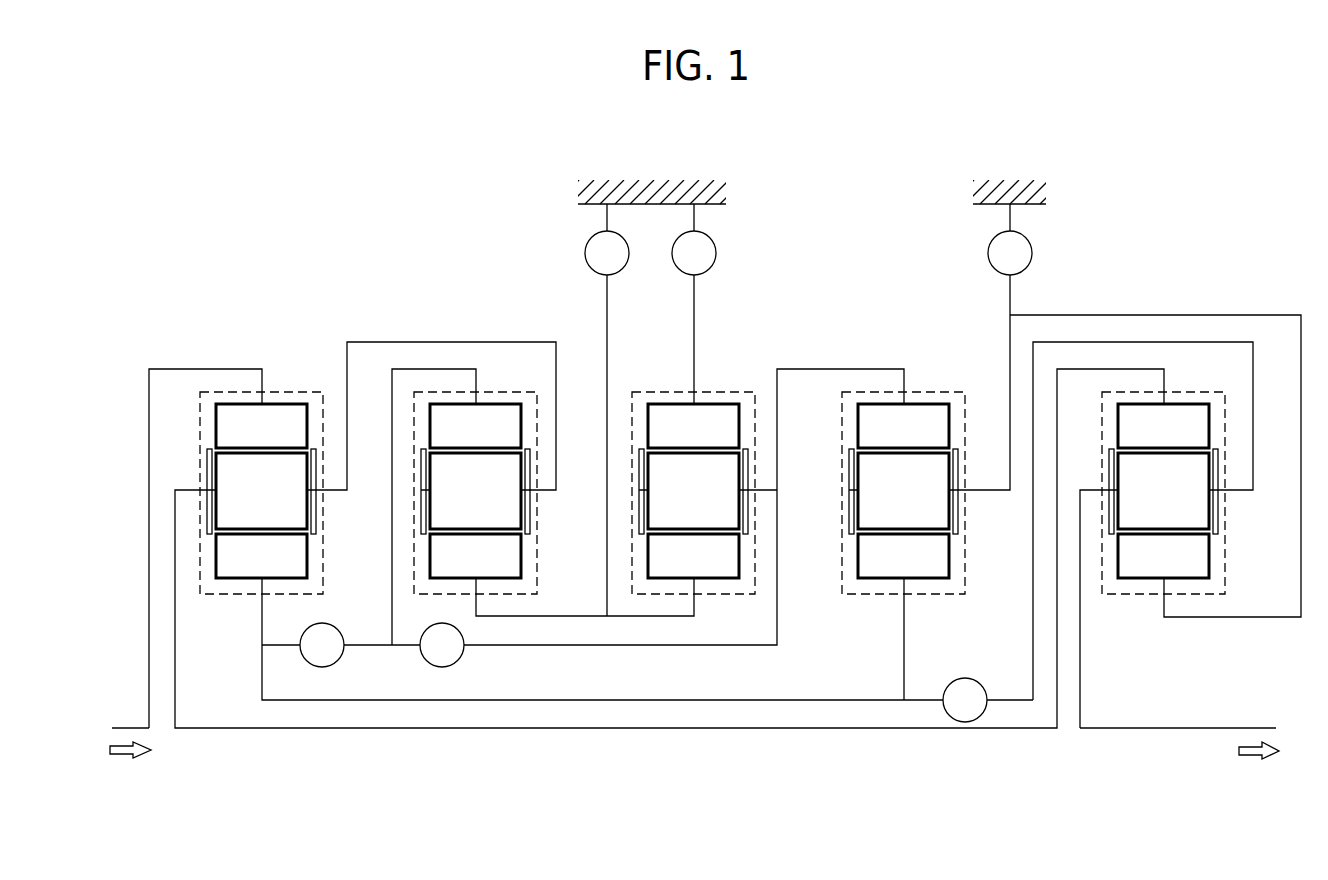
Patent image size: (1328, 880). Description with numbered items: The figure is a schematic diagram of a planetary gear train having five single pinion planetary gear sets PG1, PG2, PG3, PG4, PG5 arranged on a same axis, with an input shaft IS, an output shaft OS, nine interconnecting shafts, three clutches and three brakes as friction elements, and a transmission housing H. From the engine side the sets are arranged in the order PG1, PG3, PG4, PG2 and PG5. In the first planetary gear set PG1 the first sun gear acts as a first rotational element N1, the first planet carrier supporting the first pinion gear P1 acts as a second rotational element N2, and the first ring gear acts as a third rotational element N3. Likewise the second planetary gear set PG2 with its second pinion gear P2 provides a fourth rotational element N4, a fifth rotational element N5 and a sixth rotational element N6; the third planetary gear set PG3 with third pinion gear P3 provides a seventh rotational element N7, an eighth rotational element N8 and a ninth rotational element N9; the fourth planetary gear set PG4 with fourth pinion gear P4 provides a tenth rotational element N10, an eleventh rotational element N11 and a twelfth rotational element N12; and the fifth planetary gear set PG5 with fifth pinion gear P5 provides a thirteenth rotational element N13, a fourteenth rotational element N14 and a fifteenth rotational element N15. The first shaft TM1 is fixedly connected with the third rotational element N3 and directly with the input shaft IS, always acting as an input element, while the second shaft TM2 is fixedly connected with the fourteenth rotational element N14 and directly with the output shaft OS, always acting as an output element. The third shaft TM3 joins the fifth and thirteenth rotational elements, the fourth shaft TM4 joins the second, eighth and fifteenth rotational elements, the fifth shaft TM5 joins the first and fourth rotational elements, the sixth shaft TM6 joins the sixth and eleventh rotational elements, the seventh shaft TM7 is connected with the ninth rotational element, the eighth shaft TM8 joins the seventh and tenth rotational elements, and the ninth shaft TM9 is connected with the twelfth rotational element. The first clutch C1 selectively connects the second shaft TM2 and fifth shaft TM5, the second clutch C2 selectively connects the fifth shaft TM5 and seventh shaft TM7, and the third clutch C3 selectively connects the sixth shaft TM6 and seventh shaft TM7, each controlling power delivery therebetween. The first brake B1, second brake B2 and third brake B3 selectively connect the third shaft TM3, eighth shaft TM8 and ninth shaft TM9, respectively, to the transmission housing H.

The first planetary gear set PG1 is at (233, 597).
The second planetary gear set PG2 is at (876, 597).
The third planetary gear set PG3 is at (501, 597).
The fourth planetary gear set PG4 is at (665, 597).
The fifth planetary gear set PG5 is at (1137, 597).
The first rotational element N1 is at (261, 556).
The second rotational element N2 is at (316, 523).
The third rotational element N3 is at (261, 426).
The fourth rotational element N4 is at (903, 556).
The fifth rotational element N5 is at (958, 521).
The sixth rotational element N6 is at (903, 426).
The seventh rotational element N7 is at (475, 556).
The eighth rotational element N8 is at (530, 523).
The ninth rotational element N9 is at (475, 426).
The tenth rotational element N10 is at (693, 556).
The eleventh rotational element N11 is at (750, 524).
The twelfth rotational element N12 is at (693, 426).
The thirteenth rotational element N13 is at (1163, 556).
The fourteenth rotational element N14 is at (1218, 523).
The fifteenth rotational element N15 is at (1163, 426).
The first pinion gear P1 is at (261, 491).
The second pinion gear P2 is at (903, 491).
The third pinion gear P3 is at (475, 491).
The fourth pinion gear P4 is at (693, 491).
The fifth pinion gear P5 is at (1163, 491).
The first shaft TM1 is at (193, 368).
The second shaft TM2 is at (1208, 340).
The third shaft TM3 is at (1072, 313).
The fourth shaft TM4 is at (575, 728).
The fifth shaft TM5 is at (367, 703).
The sixth shaft TM6 is at (722, 648).
The seventh shaft TM7 is at (415, 368).
The eighth shaft TM8 is at (607, 310).
The ninth shaft TM9 is at (694, 310).
The first clutch C1 is at (965, 700).
The second clutch C2 is at (322, 645).
The third clutch C3 is at (442, 645).
The first brake B1 is at (1010, 239).
The second brake B2 is at (607, 239).
The third brake B3 is at (694, 239).
The input shaft IS is at (123, 727).
The output shaft OS is at (1257, 727).
The transmission housing H is at (648, 190).